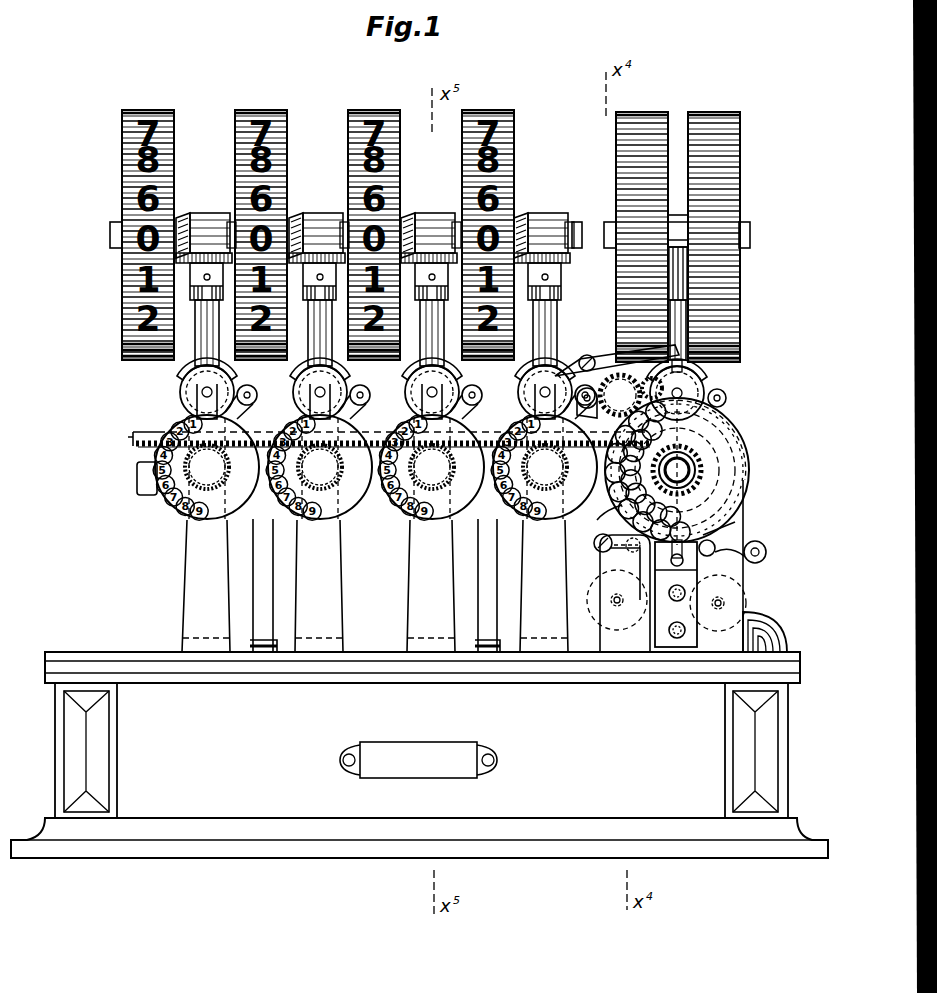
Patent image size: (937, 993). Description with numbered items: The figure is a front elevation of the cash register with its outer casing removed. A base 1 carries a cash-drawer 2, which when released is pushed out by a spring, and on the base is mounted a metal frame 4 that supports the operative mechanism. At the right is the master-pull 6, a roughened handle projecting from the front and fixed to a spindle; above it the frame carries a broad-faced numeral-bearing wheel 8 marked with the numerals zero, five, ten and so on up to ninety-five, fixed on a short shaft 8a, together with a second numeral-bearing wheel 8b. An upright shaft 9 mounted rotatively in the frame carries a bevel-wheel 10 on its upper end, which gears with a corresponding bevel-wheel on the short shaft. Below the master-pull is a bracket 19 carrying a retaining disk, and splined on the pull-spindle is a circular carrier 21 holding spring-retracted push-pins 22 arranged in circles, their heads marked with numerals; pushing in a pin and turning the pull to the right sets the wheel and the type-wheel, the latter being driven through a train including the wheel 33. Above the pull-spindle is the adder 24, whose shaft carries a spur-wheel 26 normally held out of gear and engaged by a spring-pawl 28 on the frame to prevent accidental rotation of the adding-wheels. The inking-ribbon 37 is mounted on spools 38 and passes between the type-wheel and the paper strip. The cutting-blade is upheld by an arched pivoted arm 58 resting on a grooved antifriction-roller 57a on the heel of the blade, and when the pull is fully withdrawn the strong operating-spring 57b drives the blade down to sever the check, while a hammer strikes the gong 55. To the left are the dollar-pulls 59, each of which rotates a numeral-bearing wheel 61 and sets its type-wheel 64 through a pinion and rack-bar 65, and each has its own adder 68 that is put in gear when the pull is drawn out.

The base 1 is at (53, 705).
The cash-drawer 2 is at (321, 735).
The metal frame 4 is at (464, 585).
The master-pull 6 is at (677, 470).
The numeral-bearing wheel 8 is at (745, 152).
The short shaft 8a is at (750, 232).
The numeral-bearing wheel 8b is at (618, 158).
The upright shaft 9 is at (678, 336).
The bevel-wheel 10 is at (678, 257).
The bracket 19 is at (655, 568).
The circular carrier 21 is at (744, 455).
The push-pins 22 is at (603, 517).
The adder 24 is at (715, 377).
The spur-wheel 26 is at (644, 388).
The spring-pawl 28 is at (608, 356).
The wheel 33 is at (608, 396).
The inking-ribbon 37 is at (617, 600).
The spools 38 is at (752, 600).
The gong 55 is at (784, 624).
The grooved antifriction-roller 57a is at (767, 552).
The operating-spring 57b is at (742, 562).
The arched pivoted arm 58 is at (740, 530).
The dollar-pull 59 is at (375, 467).
The numeral-bearing wheel 61 is at (520, 145).
The type-wheel 64 is at (749, 472).
The rack-bar 65 is at (377, 438).
The adder 68 is at (376, 388).